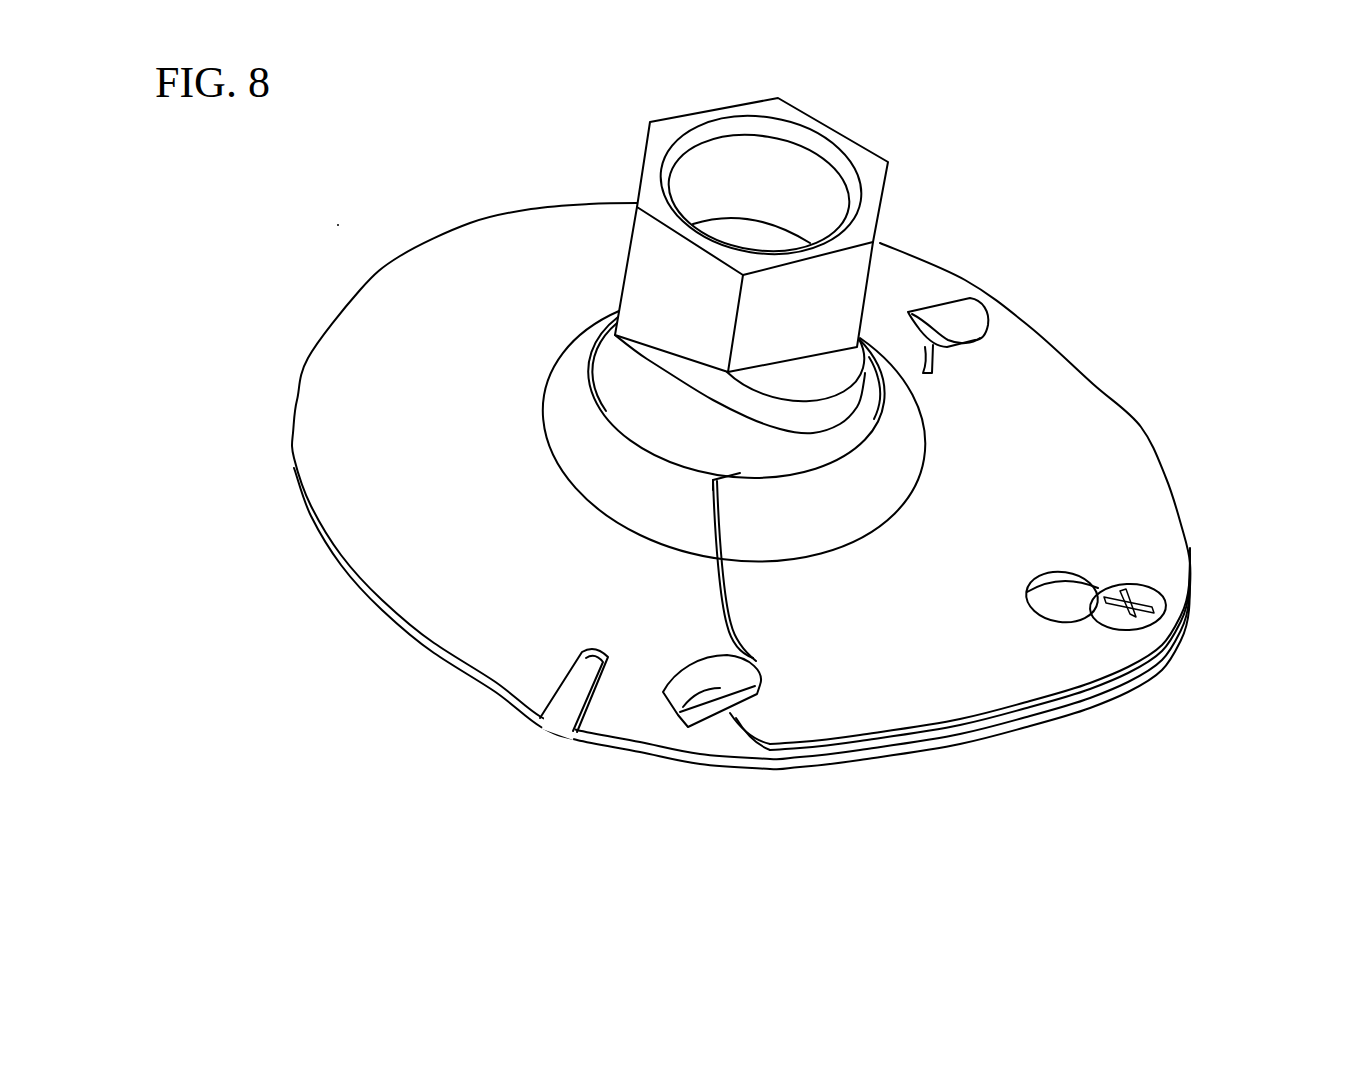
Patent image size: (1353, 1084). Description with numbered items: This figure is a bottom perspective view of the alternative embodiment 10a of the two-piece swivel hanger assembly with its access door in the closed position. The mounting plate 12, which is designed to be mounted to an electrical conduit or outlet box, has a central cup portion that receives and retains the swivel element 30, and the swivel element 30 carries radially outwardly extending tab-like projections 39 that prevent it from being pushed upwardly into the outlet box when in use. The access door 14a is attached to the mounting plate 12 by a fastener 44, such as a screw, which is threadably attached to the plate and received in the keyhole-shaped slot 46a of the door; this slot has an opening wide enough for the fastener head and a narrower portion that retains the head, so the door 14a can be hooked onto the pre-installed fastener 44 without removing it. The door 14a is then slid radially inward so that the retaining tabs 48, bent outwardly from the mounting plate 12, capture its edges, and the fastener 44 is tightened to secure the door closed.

The alternative embodiment of the two-piece swivel hanger assembly 10a is at (240, 818).
The mounting plate 12 is at (323, 508).
The access door 14a is at (1090, 423).
The swivel element 30 is at (650, 265).
The tab-like projections 39 is at (807, 378).
The fastener 44 is at (1148, 590).
The keyhole-shaped slot 46a is at (1065, 570).
The retaining tab 48 is at (957, 313).